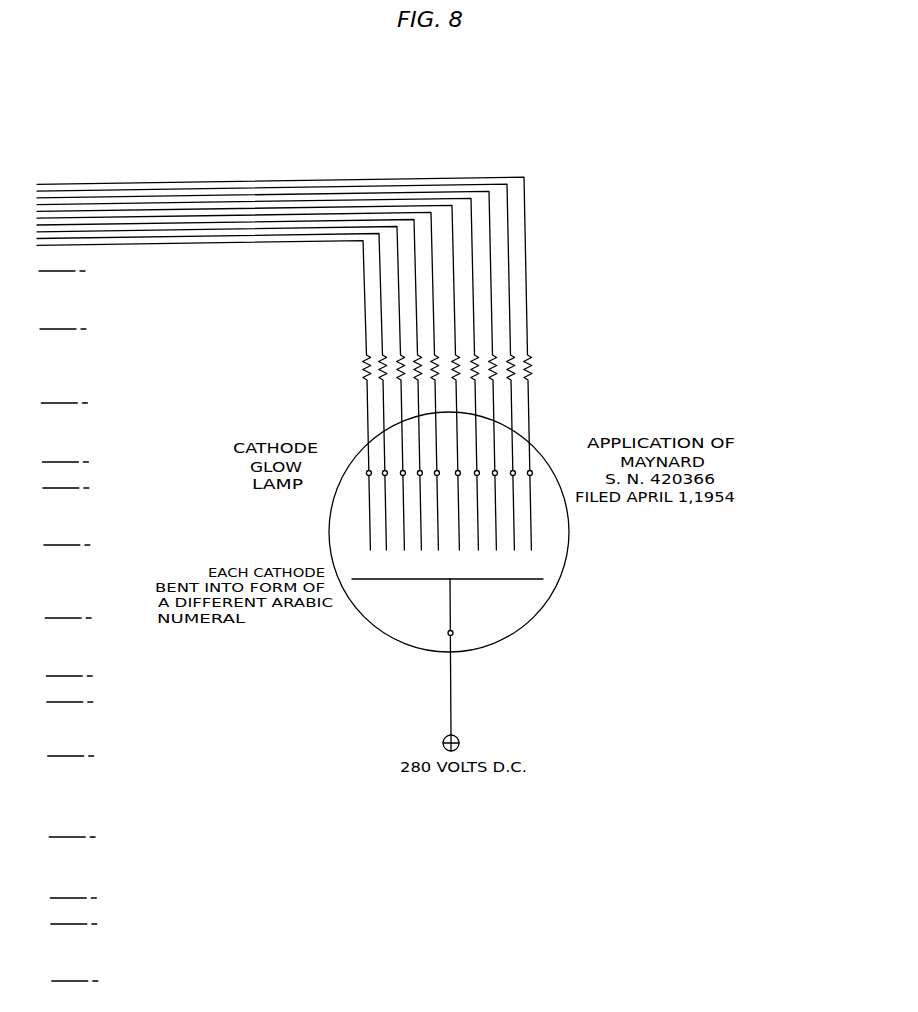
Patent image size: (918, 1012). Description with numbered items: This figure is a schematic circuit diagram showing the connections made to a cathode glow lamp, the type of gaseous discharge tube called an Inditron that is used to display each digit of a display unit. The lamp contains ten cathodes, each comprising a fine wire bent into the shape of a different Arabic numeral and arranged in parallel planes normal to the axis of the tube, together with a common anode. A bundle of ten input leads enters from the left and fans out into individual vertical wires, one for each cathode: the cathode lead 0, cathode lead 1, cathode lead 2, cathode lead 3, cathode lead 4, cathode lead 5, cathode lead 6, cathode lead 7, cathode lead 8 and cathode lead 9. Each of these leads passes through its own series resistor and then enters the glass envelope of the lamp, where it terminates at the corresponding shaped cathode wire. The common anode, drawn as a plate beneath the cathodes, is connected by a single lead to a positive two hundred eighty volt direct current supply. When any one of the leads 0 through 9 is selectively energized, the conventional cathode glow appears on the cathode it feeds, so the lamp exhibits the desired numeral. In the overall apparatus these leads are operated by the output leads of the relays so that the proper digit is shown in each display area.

The cathode lead for numeral 0 is at (552, 336).
The cathode lead for numeral 1 is at (510, 323).
The cathode lead for numeral 2 is at (492, 306).
The cathode lead for numeral 3 is at (473, 290).
The cathode lead for numeral 4 is at (454, 275).
The cathode lead for numeral 5 is at (434, 266).
The cathode lead for numeral 6 is at (417, 285).
The cathode lead for numeral 7 is at (400, 304).
The cathode lead for numeral 8 is at (382, 320).
The cathode lead for numeral 9 is at (366, 342).